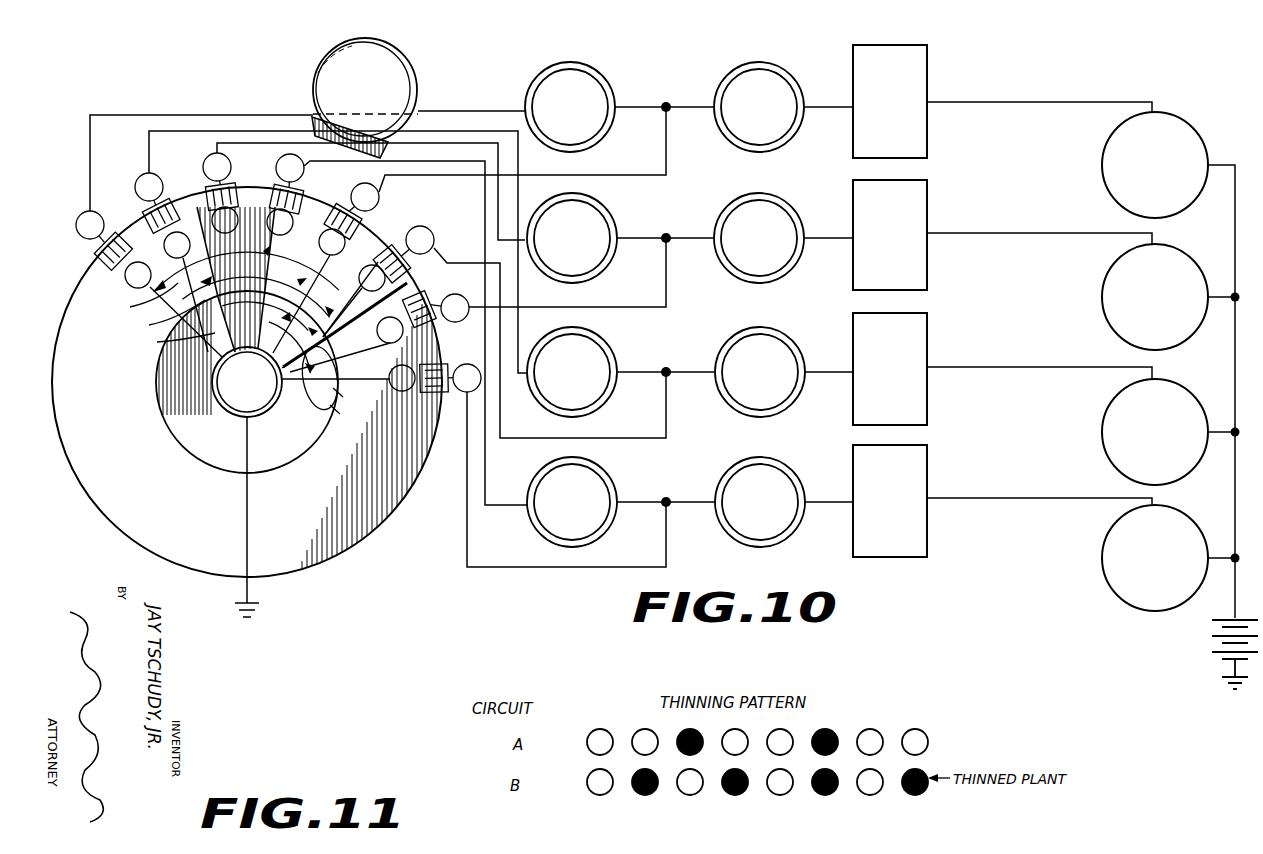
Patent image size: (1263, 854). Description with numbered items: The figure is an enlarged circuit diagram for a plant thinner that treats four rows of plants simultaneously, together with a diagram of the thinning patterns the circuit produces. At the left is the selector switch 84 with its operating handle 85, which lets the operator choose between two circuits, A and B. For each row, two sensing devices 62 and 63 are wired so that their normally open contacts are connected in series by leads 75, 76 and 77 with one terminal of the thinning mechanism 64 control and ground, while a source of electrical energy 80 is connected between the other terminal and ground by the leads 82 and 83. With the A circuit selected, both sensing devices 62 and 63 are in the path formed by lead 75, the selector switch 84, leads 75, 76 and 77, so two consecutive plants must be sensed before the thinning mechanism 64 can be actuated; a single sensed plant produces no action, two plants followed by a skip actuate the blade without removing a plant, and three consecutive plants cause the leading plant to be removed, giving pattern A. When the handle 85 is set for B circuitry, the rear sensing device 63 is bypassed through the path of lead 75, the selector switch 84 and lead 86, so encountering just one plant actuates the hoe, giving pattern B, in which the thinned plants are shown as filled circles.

The sensing device 62 is at (797, 125).
The sensing device 63 is at (602, 122).
The thinning mechanism 64 is at (928, 50).
The lead 75 is at (441, 113).
The lead 76 is at (690, 105).
The lead 77 is at (1138, 104).
The source of electrical energy 80 is at (1228, 660).
The lead 82 is at (1236, 598).
The lead 83 is at (1228, 679).
The selector switch 84 is at (332, 556).
The operating handle 85 is at (414, 70).
The lead 86 is at (630, 176).